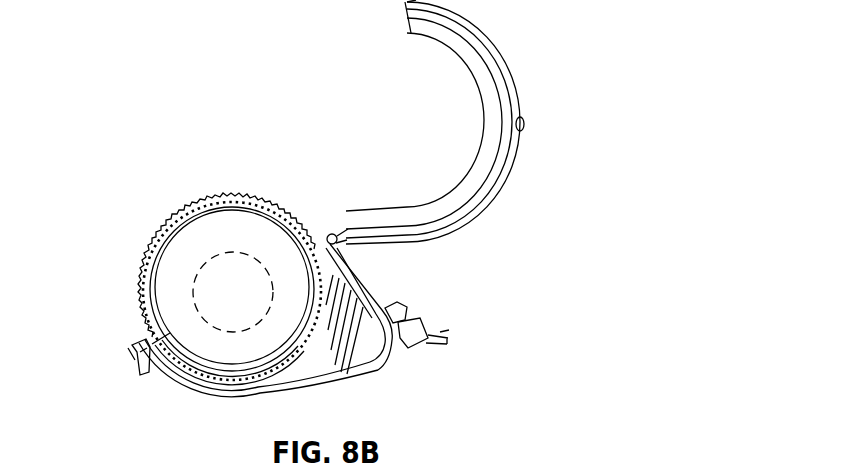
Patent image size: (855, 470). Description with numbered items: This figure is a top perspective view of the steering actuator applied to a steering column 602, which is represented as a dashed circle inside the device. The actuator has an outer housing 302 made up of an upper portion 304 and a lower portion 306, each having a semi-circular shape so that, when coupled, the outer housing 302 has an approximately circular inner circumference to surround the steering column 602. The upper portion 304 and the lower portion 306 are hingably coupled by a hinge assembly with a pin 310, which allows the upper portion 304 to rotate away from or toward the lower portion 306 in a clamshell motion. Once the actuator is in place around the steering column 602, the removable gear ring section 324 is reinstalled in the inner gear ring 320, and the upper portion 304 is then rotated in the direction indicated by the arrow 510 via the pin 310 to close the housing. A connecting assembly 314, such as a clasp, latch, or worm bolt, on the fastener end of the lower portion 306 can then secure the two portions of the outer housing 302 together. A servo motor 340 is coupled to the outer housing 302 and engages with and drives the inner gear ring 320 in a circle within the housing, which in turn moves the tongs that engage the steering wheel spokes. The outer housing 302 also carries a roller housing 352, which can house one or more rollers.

The direction 510 is at (375, 12).
The upper portion 304 is at (486, 126).
The roller housing 352 is at (524, 125).
The inner gear ring 320 is at (265, 196).
The pin 310 is at (337, 238).
The steering column 602 is at (198, 277).
The removable gear ring section 324 is at (142, 285).
The servo motor 340 is at (384, 300).
The connecting assembly 314 is at (128, 352).
The outer housing 302 is at (352, 358).
The lower portion 306 is at (237, 398).